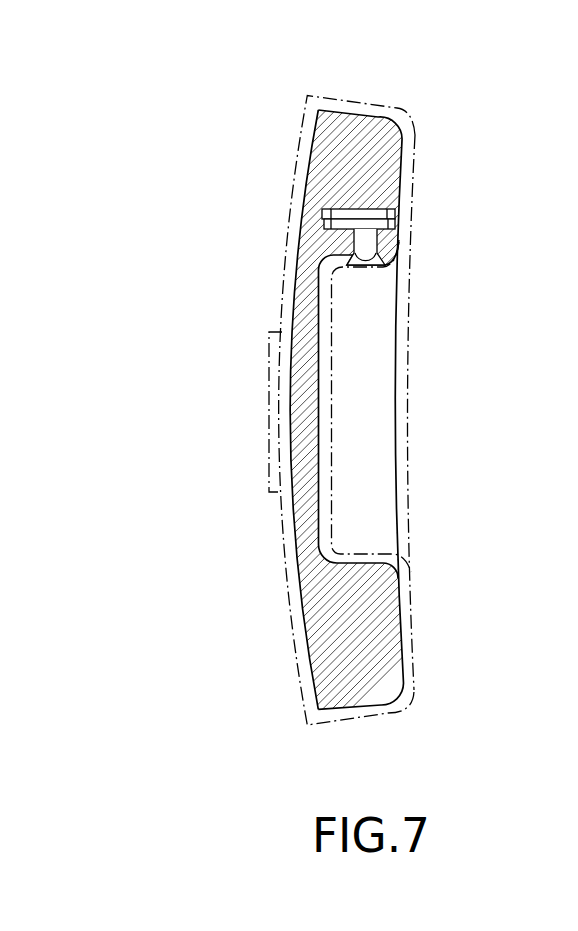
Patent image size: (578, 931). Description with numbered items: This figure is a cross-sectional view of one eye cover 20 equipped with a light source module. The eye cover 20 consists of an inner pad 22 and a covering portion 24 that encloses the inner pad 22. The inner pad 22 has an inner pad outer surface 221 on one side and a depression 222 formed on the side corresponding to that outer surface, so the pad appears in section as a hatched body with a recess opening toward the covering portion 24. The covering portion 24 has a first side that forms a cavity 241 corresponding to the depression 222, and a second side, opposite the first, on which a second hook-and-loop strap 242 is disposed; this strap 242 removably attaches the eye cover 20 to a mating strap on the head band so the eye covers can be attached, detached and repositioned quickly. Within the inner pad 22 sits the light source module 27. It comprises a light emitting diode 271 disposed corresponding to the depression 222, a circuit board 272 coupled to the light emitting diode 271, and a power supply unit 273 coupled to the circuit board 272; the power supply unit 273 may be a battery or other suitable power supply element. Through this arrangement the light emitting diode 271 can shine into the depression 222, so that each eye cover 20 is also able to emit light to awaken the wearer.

The eye cover 20 is at (441, 49).
The inner pad 22 is at (307, 175).
The inner pad outer surface 221 is at (292, 398).
The depression 222 is at (318, 392).
The covering portion 24 is at (290, 239).
The cavity 241 is at (409, 473).
The second hook-and-loop strap 242 is at (273, 453).
The light source module 27 is at (510, 183).
The light emitting diode (LED) 271 is at (362, 246).
The circuit board 272 is at (382, 224).
The power supply unit 273 is at (380, 213).